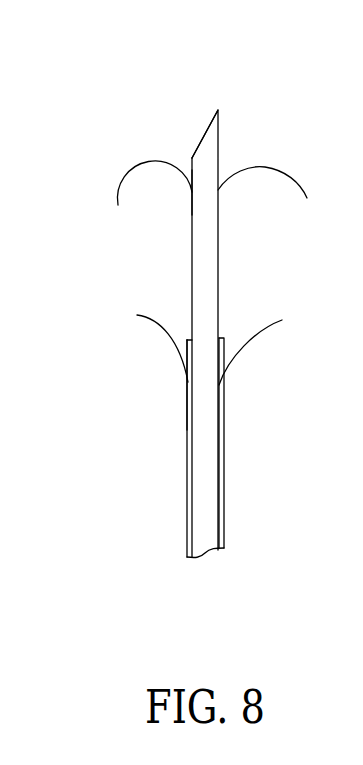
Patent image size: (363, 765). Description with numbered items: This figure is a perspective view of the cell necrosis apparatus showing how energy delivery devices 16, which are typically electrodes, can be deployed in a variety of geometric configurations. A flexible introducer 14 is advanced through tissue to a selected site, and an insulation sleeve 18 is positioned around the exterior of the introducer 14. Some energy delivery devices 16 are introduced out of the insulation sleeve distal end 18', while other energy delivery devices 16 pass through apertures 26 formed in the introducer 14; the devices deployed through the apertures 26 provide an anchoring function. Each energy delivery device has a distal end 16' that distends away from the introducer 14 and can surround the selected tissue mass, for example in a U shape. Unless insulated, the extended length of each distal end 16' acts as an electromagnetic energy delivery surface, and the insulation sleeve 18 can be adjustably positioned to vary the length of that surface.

The introducer 14 is at (210, 242).
The energy delivery device 16 is at (248, 112).
The energy delivery device distal end 16' is at (204, 242).
The insulation sleeve 18 is at (243, 448).
The insulation sleeve distal end 18' is at (155, 385).
The aperture 26 is at (192, 193).